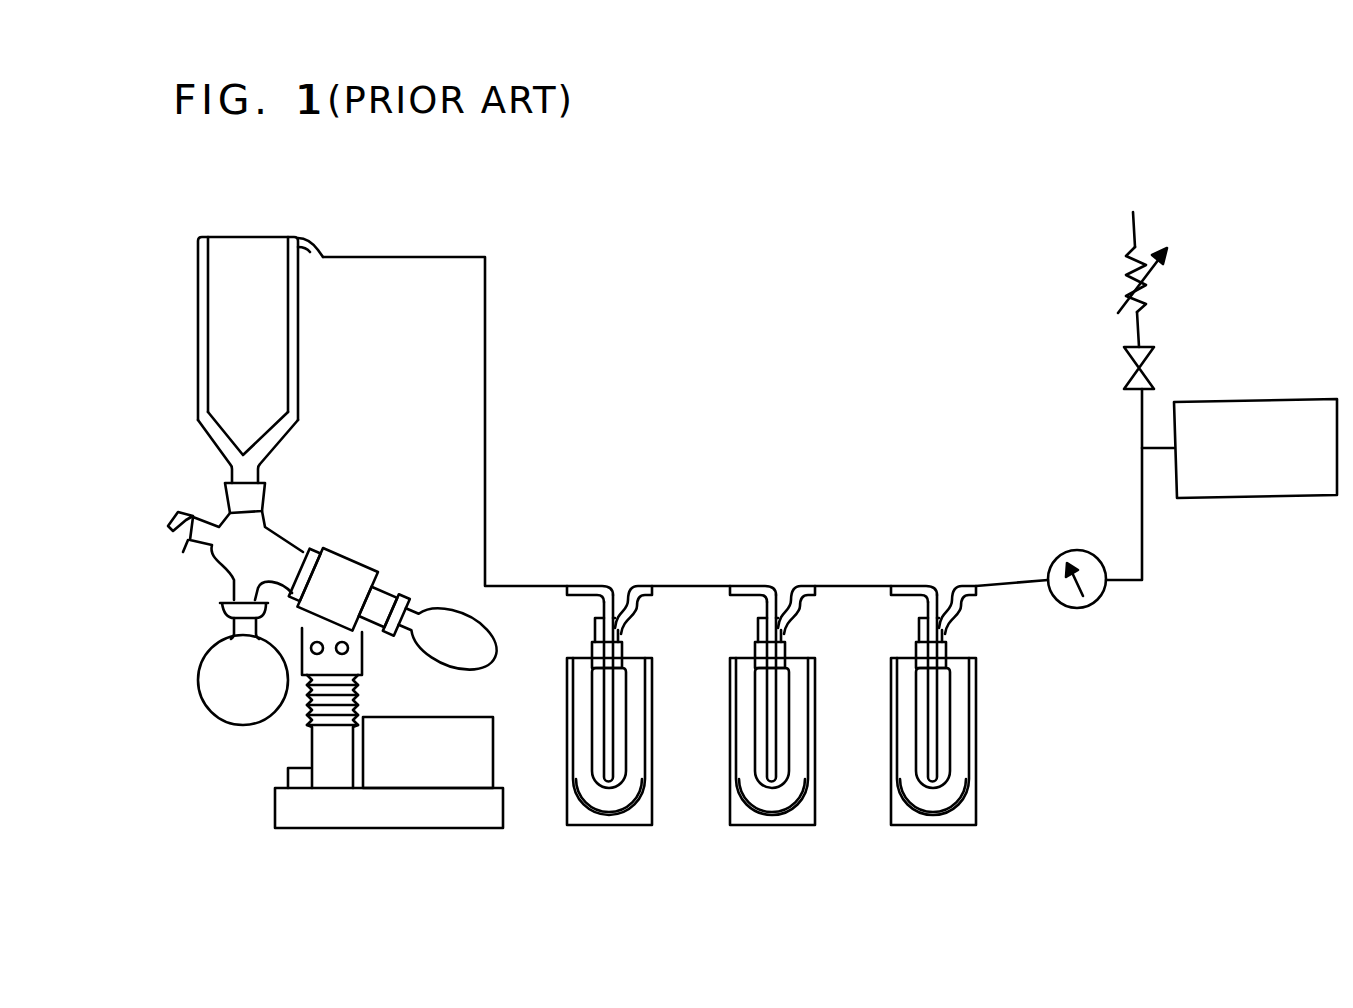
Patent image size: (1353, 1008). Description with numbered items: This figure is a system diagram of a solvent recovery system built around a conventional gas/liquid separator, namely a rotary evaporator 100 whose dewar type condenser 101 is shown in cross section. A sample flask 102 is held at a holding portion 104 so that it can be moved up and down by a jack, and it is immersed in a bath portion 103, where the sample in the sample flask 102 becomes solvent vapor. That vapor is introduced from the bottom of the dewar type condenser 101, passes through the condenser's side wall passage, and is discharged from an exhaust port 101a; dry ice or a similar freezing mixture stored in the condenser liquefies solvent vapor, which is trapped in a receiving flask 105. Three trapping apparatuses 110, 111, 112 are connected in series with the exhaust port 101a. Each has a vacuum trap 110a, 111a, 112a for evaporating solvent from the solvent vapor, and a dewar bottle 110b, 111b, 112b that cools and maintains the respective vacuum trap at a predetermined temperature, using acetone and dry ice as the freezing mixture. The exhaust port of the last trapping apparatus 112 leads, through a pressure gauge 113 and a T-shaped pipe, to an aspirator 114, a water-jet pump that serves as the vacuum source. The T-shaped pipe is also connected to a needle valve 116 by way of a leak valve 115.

The rotary evaporator 100 is at (272, 523).
The dewar type condenser 101 is at (298, 343).
The exhaust port 101a is at (318, 254).
The sample flask 102 is at (457, 615).
The bath portion 103 is at (482, 757).
The holding portion 104 is at (342, 562).
The receiving flask 105 is at (212, 693).
The trapping apparatus 110 is at (600, 730).
The vacuum trap 110a is at (590, 818).
The dewar bottle 110b is at (637, 822).
The trapping apparatus 111 is at (765, 730).
The vacuum trap 111a is at (753, 818).
The dewar bottle 111b is at (800, 822).
The trapping apparatus 112 is at (926, 729).
The vacuum trap 112a is at (914, 818).
The dewar bottle 112b is at (961, 822).
The pressure gauge 113 is at (1098, 590).
The aspirator (water-jet pump) 114 is at (1242, 498).
The leak valve 115 is at (1148, 365).
The needle valve 116 is at (1147, 295).